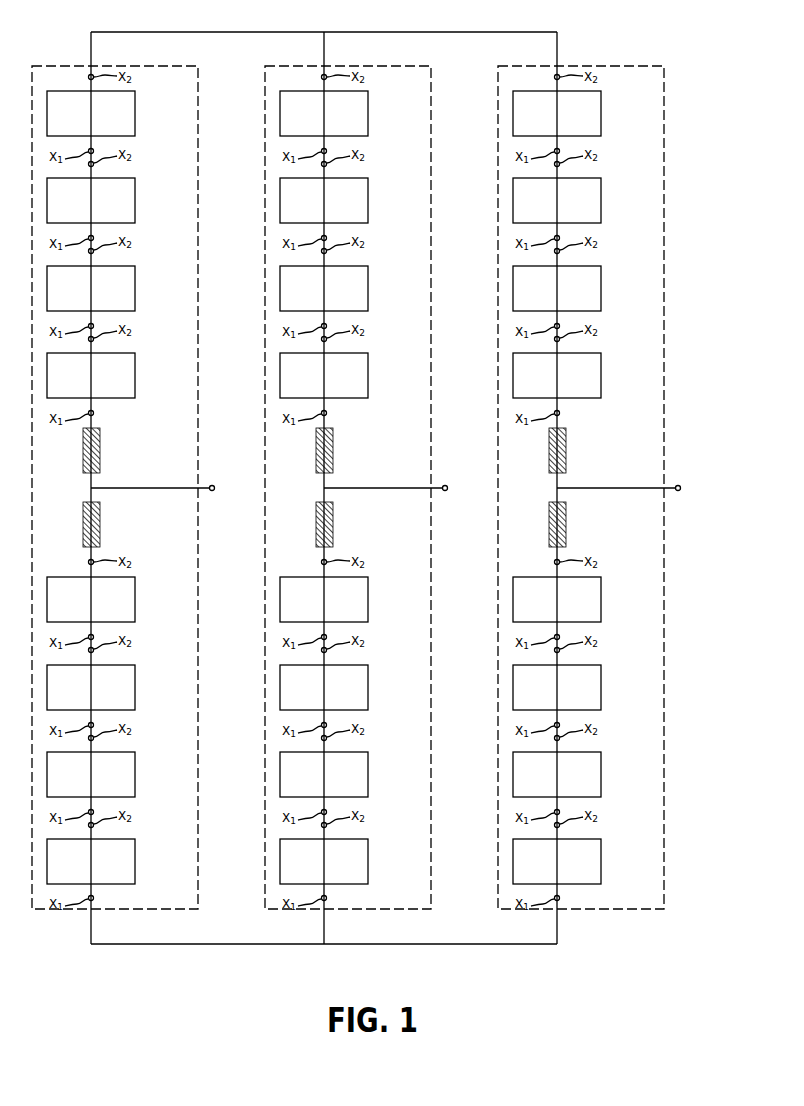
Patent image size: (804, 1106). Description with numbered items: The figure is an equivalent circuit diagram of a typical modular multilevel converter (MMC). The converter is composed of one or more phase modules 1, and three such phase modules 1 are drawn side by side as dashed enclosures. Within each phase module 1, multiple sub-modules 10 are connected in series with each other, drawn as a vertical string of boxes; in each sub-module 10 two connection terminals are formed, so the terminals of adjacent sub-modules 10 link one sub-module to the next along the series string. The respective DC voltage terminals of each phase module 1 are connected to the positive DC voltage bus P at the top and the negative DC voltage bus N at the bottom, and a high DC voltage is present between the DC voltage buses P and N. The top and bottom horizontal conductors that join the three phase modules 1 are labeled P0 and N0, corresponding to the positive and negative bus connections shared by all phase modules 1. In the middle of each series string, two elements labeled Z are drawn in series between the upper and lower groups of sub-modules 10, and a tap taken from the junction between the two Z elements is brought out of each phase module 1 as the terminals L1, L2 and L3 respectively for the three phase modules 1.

The phase module 1 is at (198, 238).
The sub-module 10 is at (349, 487).
The impedance Z is at (343, 487).
The first intermediate tap L1 is at (164, 489).
The second intermediate tap L2 is at (397, 489).
The third intermediate tap L3 is at (630, 489).
The positive bus line P0 is at (200, 32).
The negative bus line N0 is at (200, 944).
The positive DC voltage bus P is at (323, 20).
The negative DC voltage bus N is at (324, 960).